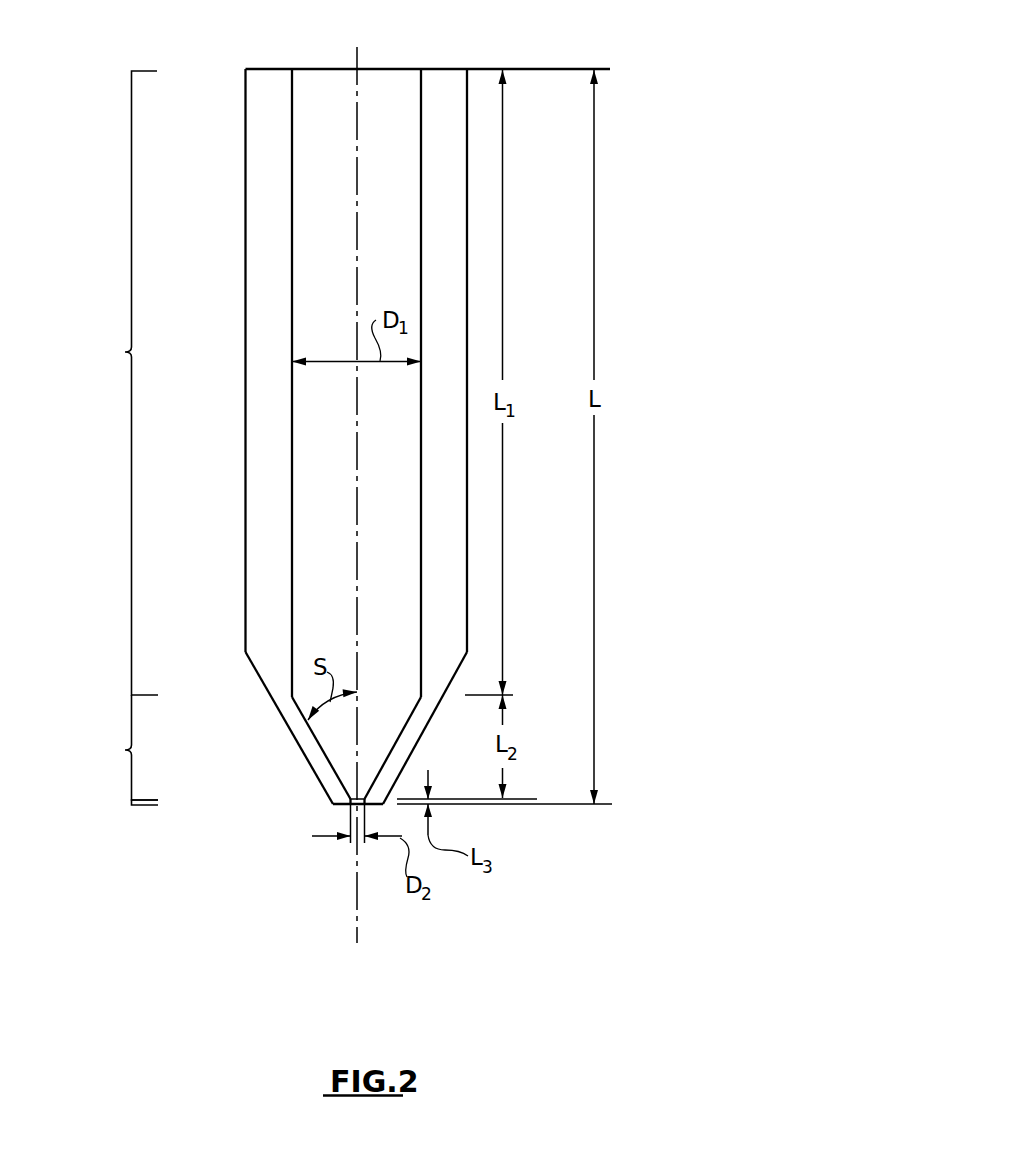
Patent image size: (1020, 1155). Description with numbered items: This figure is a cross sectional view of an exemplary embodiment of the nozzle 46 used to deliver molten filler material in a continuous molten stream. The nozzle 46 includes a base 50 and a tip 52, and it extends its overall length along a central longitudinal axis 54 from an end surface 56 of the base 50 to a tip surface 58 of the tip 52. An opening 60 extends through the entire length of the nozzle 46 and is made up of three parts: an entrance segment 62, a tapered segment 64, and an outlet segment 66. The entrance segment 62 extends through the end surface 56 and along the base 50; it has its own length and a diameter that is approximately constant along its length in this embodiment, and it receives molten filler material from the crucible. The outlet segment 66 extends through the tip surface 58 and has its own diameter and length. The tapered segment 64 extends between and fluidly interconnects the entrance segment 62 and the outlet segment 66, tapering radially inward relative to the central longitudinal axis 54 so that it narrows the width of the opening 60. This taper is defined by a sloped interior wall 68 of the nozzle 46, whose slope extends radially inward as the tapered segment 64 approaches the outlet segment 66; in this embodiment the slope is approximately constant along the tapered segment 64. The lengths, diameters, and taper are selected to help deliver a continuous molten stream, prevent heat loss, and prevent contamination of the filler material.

The nozzle 46 is at (477, 481).
The base 50 is at (242, 145).
The tip 52 is at (295, 764).
The central longitudinal axis 54 is at (357, 158).
The end surface 56 is at (256, 68).
The tip surface 58 is at (345, 808).
The opening 60 is at (310, 244).
The entrance segment 62 is at (125, 352).
The tapered segment 64 is at (125, 750).
The outlet segment 66 is at (131, 803).
The interior wall 68 is at (400, 722).